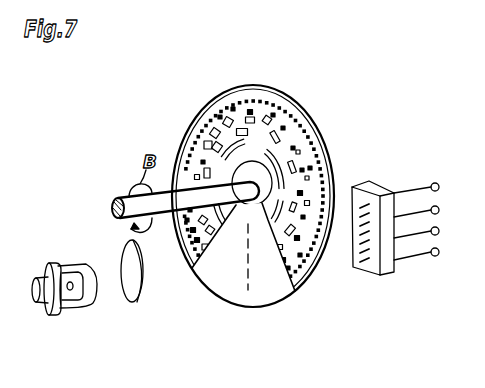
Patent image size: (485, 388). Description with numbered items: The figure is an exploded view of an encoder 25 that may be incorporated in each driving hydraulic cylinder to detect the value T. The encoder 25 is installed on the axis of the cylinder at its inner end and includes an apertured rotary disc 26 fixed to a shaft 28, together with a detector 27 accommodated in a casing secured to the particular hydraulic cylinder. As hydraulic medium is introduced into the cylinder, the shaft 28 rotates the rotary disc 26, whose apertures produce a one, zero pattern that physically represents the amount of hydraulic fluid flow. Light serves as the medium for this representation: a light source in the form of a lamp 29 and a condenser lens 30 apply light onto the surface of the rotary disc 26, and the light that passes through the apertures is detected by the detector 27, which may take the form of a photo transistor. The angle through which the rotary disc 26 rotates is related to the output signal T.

The encoder 25 is at (317, 128).
The rotary disc 26 is at (237, 98).
The detector 27 is at (355, 268).
The shaft 28 is at (123, 193).
The lamp 29 is at (85, 308).
The condenser lens 30 is at (145, 299).